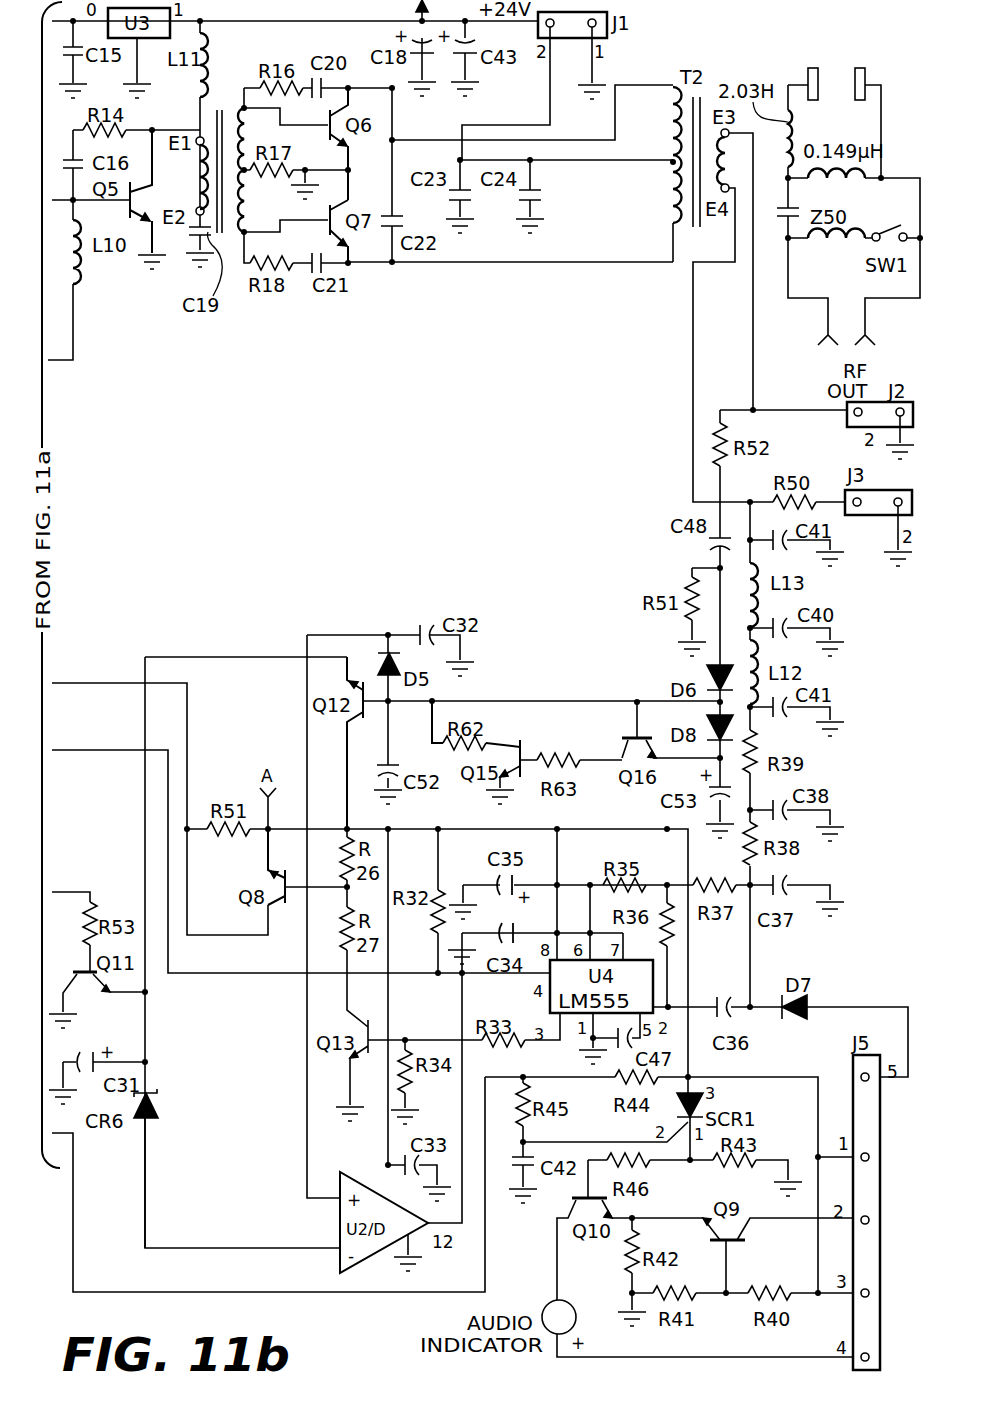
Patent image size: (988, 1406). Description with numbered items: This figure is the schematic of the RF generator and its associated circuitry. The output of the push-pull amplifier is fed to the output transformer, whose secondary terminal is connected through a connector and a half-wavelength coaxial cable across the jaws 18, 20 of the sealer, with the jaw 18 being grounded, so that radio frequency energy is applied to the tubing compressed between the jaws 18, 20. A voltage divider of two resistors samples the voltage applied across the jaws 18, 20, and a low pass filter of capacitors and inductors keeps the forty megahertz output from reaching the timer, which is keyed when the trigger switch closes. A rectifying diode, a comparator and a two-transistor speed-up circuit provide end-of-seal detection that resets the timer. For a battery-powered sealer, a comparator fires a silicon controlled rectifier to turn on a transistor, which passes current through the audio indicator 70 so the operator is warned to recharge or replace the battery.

The jaw 18 is at (868, 75).
The jaw 20 is at (804, 78).
The audio indicator 70 is at (569, 1300).